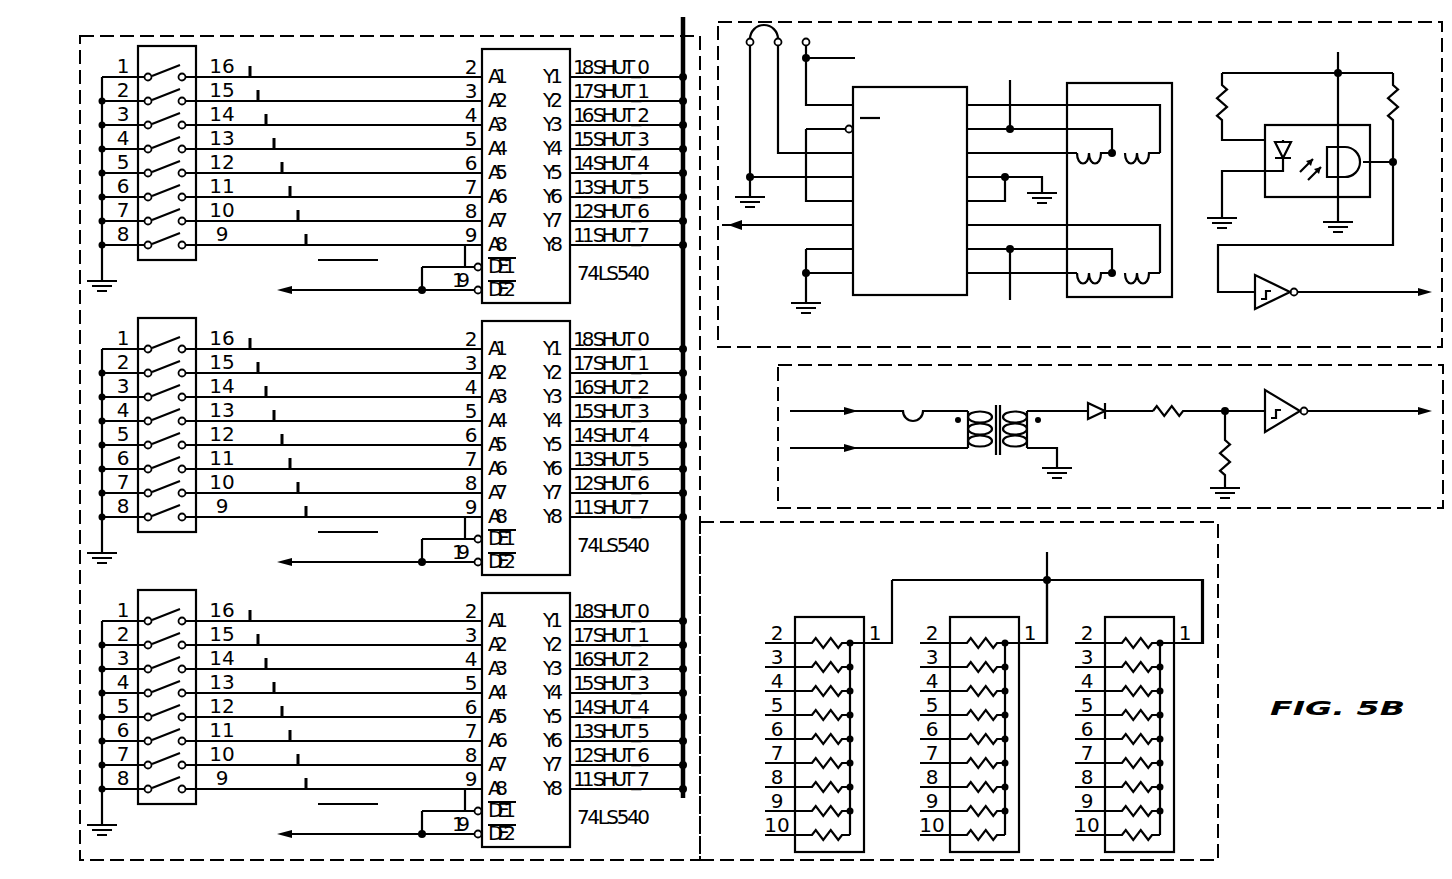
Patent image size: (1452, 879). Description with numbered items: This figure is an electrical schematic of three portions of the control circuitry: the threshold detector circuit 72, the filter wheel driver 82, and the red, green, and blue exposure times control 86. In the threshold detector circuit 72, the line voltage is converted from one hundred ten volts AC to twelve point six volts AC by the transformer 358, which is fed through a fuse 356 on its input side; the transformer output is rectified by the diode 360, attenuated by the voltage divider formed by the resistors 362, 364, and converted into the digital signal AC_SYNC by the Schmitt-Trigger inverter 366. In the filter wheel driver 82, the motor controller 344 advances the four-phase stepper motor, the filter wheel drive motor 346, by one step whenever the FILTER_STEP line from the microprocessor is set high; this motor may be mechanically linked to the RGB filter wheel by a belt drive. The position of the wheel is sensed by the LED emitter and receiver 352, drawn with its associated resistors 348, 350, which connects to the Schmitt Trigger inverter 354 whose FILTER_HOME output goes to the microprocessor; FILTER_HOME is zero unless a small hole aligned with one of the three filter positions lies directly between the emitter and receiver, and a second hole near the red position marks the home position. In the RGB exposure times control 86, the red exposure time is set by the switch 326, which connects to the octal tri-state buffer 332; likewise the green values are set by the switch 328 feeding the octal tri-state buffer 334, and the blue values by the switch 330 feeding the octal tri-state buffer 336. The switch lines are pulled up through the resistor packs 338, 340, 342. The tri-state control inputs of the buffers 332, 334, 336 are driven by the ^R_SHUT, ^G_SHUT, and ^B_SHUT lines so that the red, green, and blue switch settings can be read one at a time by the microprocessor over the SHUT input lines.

The threshold detector circuit 72 is at (1333, 508).
The filter wheel driver 82 is at (752, 347).
The red, green, and blue exposure times control 86 is at (1222, 632).
The switch 326 is at (184, 183).
The switch 328 is at (284, 440).
The switch 330 is at (284, 712).
The octal tri-state buffer 332 is at (570, 218).
The octal tri-state buffer 334 is at (482, 451).
The octal tri-state buffer 336 is at (482, 723).
The resistor pack RP1 338 is at (832, 716).
The resistor pack RP2 340 is at (987, 716).
The resistor pack RP3 342 is at (1142, 716).
The motor controller 344 is at (893, 295).
The filter wheel drive motor 346 is at (1145, 297).
The 200 ohm resistor 348 is at (1231, 106).
The 270 ohm resistor 350 is at (1393, 117).
The LED emitter and receiver 352 is at (1301, 125).
The Schmitt Trigger inverter 354 is at (1325, 249).
The fuse 356 is at (910, 408).
The transformer 358 is at (998, 408).
The diode 360 is at (1095, 418).
The resistor 362 is at (1168, 418).
The resistor 364 is at (1214, 462).
The Schmitt-Trigger inverter 366 is at (1262, 398).